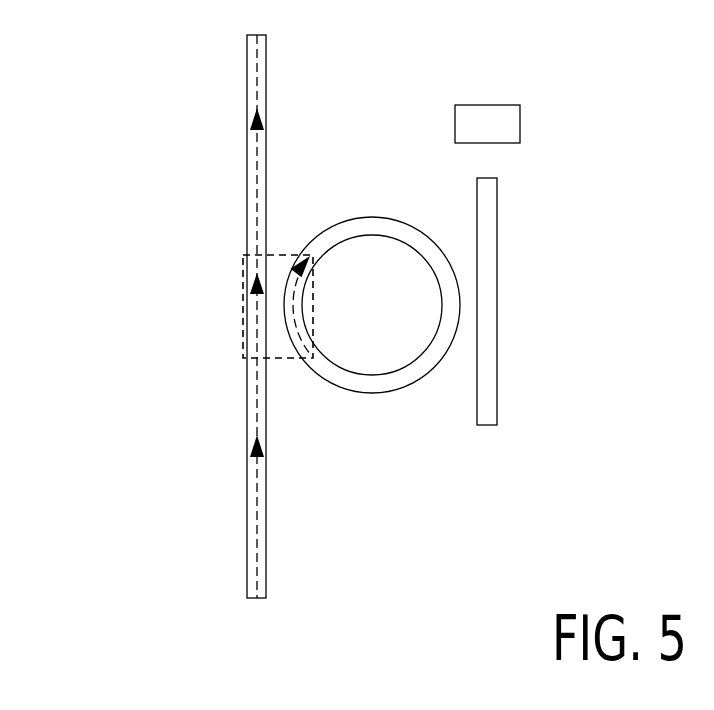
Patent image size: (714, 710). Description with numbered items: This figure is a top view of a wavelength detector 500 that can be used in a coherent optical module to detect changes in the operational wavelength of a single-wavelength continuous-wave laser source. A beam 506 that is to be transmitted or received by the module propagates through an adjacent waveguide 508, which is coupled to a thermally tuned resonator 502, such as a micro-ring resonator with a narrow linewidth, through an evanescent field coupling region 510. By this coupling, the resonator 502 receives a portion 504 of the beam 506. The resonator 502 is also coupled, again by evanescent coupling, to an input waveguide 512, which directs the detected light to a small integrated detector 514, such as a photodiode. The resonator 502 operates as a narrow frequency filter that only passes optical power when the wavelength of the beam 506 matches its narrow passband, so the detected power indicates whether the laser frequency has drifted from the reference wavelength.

The wavelength detector 500 is at (116, 147).
The thermally tuned resonator 502 is at (358, 392).
The portion of the beam 504 is at (282, 270).
The beam 506 is at (257, 555).
The waveguide 508 is at (247, 508).
The evanescent field coupling region 510 is at (243, 313).
The input waveguide 512 is at (497, 345).
The integrated detector 514 is at (520, 120).